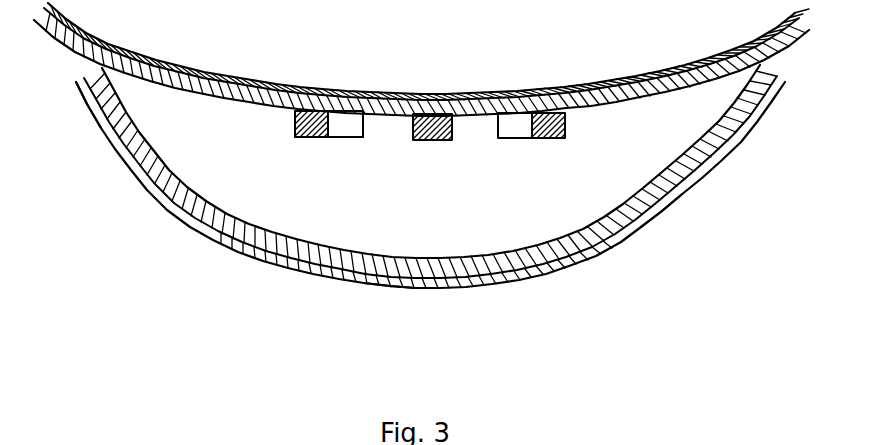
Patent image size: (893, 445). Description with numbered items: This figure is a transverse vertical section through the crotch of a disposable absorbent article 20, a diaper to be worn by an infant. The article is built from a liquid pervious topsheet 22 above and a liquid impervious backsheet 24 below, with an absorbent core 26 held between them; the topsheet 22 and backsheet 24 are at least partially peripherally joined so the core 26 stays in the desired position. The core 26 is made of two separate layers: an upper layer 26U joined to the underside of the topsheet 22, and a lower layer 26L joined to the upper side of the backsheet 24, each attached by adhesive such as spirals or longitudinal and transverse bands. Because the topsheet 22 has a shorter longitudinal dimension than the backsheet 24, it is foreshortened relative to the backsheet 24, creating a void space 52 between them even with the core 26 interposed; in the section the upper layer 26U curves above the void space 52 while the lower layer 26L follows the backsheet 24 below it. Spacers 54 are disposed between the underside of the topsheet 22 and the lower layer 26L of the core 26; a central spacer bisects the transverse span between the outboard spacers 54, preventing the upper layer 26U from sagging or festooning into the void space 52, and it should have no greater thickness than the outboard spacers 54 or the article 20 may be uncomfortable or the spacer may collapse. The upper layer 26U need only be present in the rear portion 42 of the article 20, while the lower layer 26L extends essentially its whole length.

The disposable absorbent article 20 is at (667, 232).
The liquid pervious topsheet 22 is at (143, 62).
The liquid impervious backsheet 24 is at (243, 245).
The absorbent core 26 is at (95, 70).
The upper layer 26U is at (643, 78).
The lower layer 26L is at (673, 200).
The rear portion 42 is at (382, 302).
The void space 52 is at (500, 207).
The outboard spacers 54 is at (317, 112).